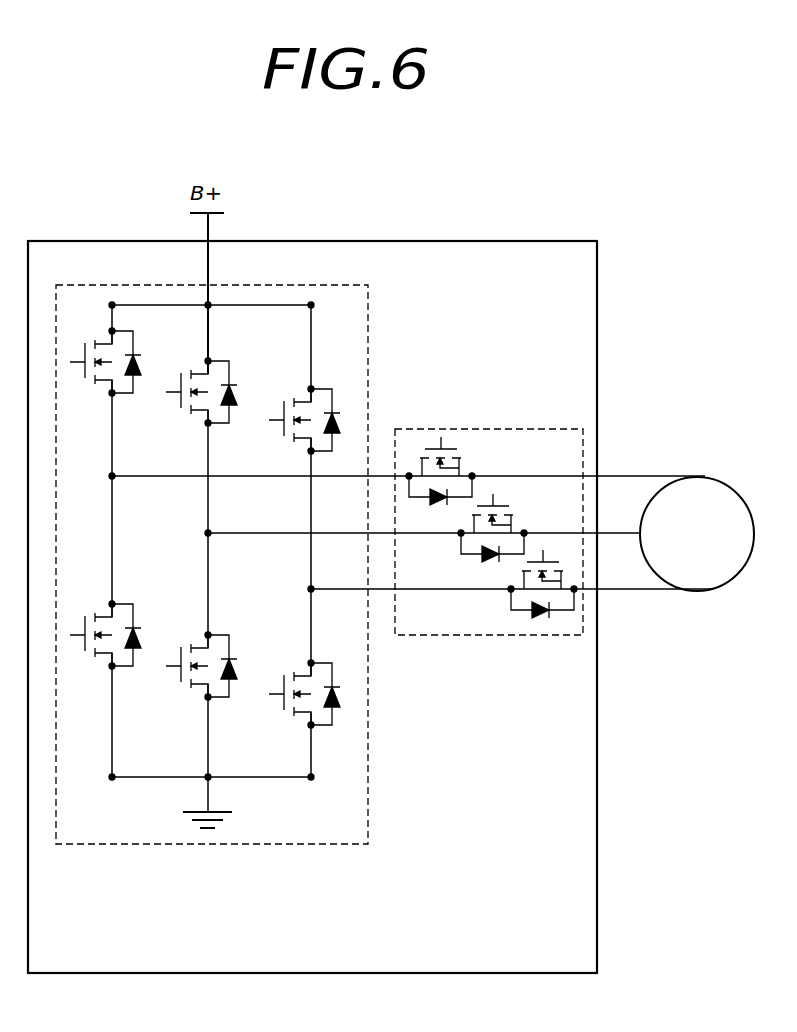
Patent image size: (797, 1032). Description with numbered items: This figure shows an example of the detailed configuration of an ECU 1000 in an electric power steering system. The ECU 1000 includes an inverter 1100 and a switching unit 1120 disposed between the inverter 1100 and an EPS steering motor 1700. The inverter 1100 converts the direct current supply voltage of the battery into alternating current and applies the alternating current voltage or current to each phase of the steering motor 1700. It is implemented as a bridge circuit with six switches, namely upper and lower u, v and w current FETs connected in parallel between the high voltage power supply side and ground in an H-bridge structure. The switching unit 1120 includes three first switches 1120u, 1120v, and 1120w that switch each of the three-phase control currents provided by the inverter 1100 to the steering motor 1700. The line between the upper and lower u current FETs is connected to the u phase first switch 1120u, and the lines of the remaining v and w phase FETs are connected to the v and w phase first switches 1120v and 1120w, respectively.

The ECU 1000 is at (493, 230).
The inverter 1100 is at (288, 285).
The switching unit 1120 is at (552, 429).
The u phase first switch 1120u is at (450, 449).
The v phase first switch 1120v is at (460, 547).
The w phase first switch 1120w is at (510, 600).
The steering motor 1700 is at (697, 477).